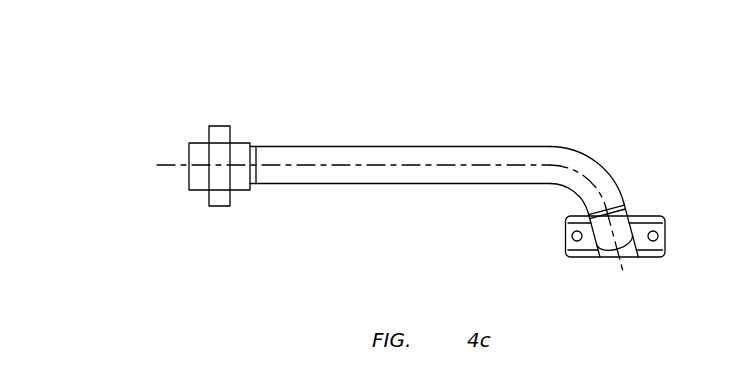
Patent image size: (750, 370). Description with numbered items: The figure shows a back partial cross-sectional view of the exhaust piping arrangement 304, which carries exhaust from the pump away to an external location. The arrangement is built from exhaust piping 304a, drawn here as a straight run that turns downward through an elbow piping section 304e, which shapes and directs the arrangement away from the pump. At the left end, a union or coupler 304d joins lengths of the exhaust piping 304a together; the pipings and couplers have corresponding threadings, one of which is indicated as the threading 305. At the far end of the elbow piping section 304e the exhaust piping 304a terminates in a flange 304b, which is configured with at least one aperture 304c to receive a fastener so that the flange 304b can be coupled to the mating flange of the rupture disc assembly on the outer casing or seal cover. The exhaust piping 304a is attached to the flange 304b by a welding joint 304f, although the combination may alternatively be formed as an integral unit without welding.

The exhaust piping arrangement 304 is at (368, 145).
The exhaust piping 304a is at (481, 165).
The flange 304b is at (599, 252).
The aperture 304c is at (572, 236).
The union or coupler 304d is at (219, 126).
The elbow piping section 304e is at (631, 162).
The welding joint 304f is at (652, 217).
The threading 305 is at (255, 184).